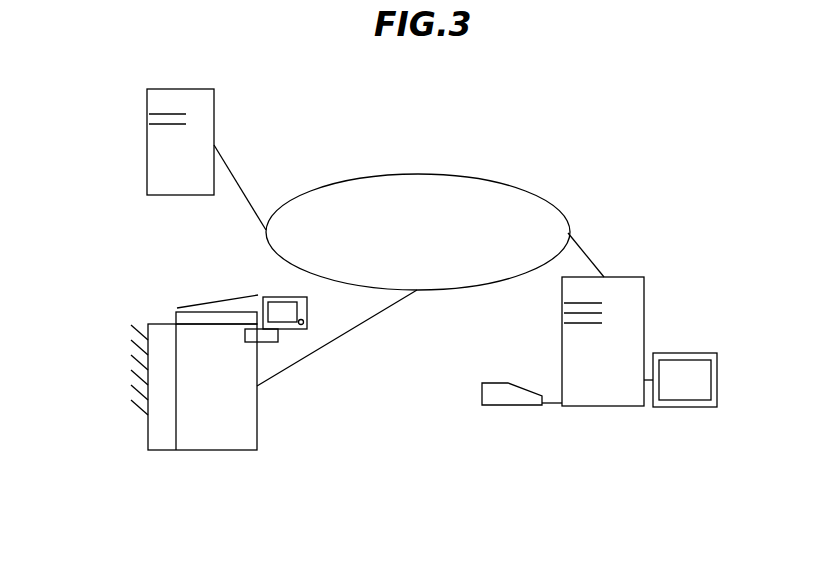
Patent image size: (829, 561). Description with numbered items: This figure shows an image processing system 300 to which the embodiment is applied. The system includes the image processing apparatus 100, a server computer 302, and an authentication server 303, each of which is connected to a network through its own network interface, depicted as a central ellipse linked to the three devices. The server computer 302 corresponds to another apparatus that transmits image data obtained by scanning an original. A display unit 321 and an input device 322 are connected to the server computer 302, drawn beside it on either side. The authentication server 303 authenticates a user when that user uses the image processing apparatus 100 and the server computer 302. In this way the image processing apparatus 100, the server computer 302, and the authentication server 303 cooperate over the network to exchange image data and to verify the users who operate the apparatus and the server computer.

The image processing system 300 is at (110, 90).
The authentication server 303 is at (214, 107).
The server computer 302 is at (623, 277).
The display unit 321 is at (702, 353).
The input device 322 is at (495, 383).
The image processing apparatus 100 is at (227, 450).